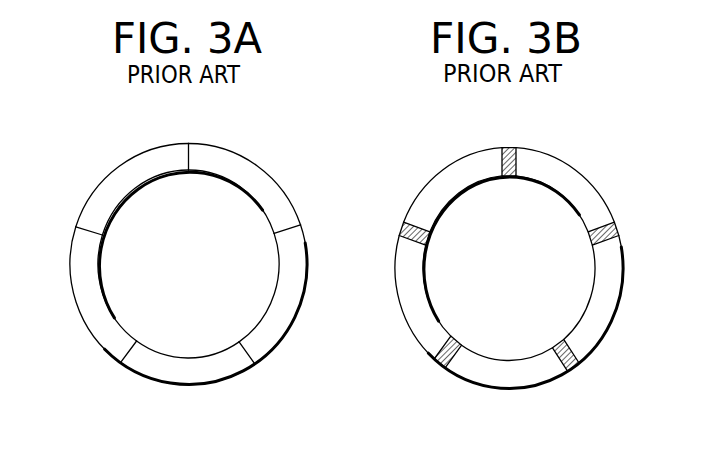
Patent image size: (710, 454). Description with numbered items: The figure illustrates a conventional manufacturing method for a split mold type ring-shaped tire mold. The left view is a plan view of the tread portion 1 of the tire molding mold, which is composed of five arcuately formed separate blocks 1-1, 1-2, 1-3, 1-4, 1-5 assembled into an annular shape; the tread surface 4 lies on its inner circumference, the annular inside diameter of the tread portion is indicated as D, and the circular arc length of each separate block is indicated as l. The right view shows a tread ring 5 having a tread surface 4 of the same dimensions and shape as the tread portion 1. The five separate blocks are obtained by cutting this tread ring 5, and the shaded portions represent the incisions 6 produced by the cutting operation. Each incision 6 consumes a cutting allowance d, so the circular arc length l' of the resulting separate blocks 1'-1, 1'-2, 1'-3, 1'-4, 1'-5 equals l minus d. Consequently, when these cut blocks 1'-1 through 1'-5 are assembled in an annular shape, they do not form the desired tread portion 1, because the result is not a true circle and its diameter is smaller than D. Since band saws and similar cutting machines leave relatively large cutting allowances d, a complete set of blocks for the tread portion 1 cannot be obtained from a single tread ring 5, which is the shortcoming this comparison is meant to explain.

In FIG. 3A, the tread portion 1 is at (166, 269).
In FIG. 3A, the separate block 1-1 is at (269, 186).
In FIG. 3A, the separate block 1-2 is at (292, 284).
In FIG. 3A, the separate block 1-3 is at (190, 384).
In FIG. 3A, the separate block 1-4 is at (86, 301).
In FIG. 3A, the separate block 1-5 is at (138, 168).
In FIG. 3A, the tread surface 4 is at (233, 192).
In FIG. 3B, the tread surface 4 is at (461, 201).
In FIG. 3B, the tread ring 5 is at (448, 152).
In FIG. 3B, the separate block 1'-1 is at (565, 168).
In FIG. 3B, the separate block 1'-2 is at (623, 300).
In FIG. 3B, the separate block 1'-3 is at (506, 395).
In FIG. 3B, the separate block 1'-4 is at (389, 299).
In FIG. 3B, the separate block 1'-5 is at (440, 190).
In FIG. 3B, the incision 6 is at (510, 178).
In FIG. 3A, the annular inside diameter D is at (252, 212).
In FIG. 3B, the annular inside diameter D is at (568, 215).
In FIG. 3B, the cutting allowance d is at (516, 147).
In FIG. 3A, the circular arc length l is at (257, 170).
In FIG. 3B, the circular arc length l' is at (580, 172).